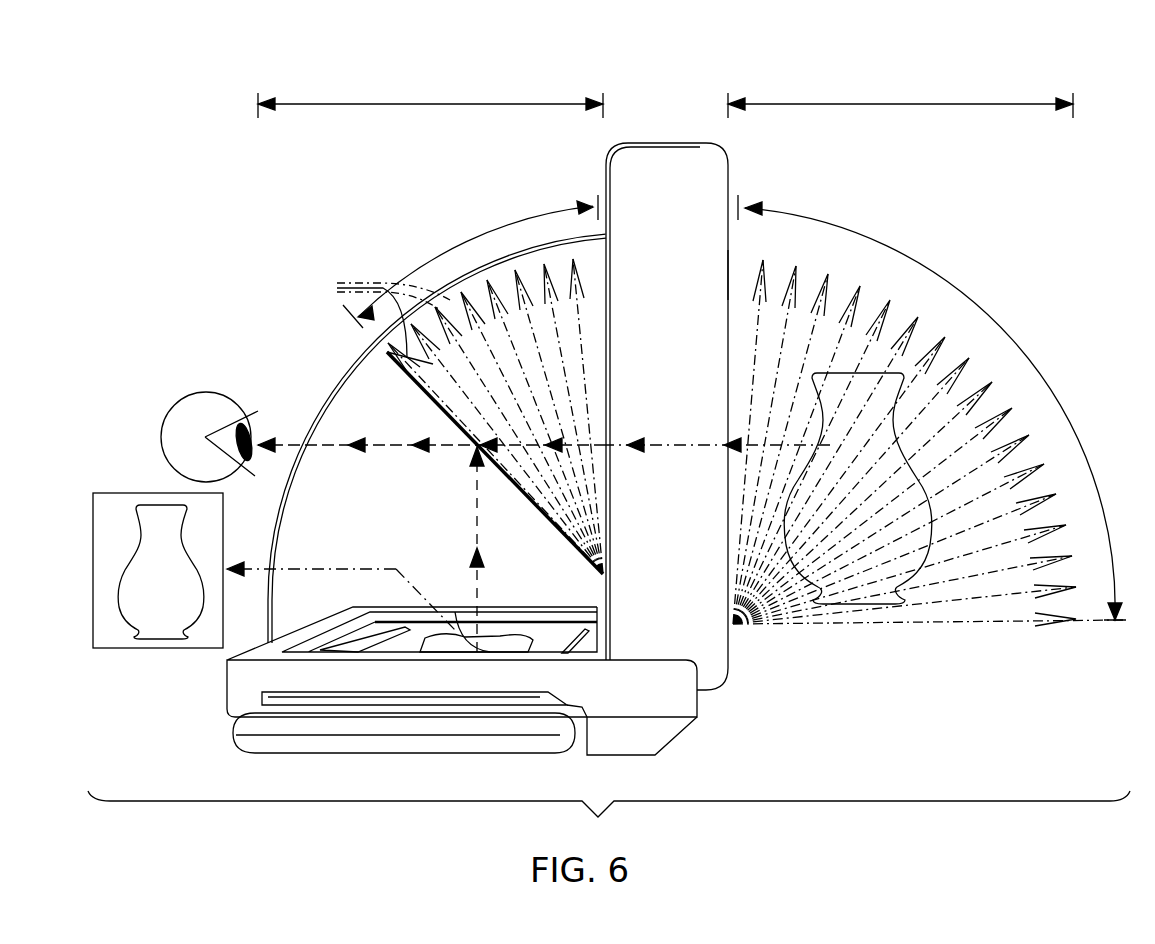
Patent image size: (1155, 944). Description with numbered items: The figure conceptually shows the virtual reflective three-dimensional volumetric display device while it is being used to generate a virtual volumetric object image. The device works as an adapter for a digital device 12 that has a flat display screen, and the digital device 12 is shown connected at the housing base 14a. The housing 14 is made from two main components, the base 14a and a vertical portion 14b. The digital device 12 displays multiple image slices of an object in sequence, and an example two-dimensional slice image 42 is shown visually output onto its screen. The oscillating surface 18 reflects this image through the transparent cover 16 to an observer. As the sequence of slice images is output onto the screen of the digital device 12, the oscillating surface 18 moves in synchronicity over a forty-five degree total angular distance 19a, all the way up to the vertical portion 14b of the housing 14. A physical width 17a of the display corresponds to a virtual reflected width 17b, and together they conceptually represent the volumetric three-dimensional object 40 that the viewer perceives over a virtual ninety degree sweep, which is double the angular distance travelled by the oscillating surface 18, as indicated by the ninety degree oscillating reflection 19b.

The digital device 12 is at (403, 753).
The housing 14 is at (777, 181).
The base of the housing 14a is at (227, 686).
The vertical portion of the housing 14b is at (728, 276).
The transparent cover 16 is at (347, 368).
The physical width 17a is at (432, 104).
The virtual reflected width 17b is at (900, 104).
The oscillating surface 18 is at (454, 427).
The total angular distance 19a is at (463, 238).
The oscillating reflection 19b is at (886, 240).
The volumetric 3D object 40 is at (894, 364).
The 2D slice image 42 is at (122, 493).